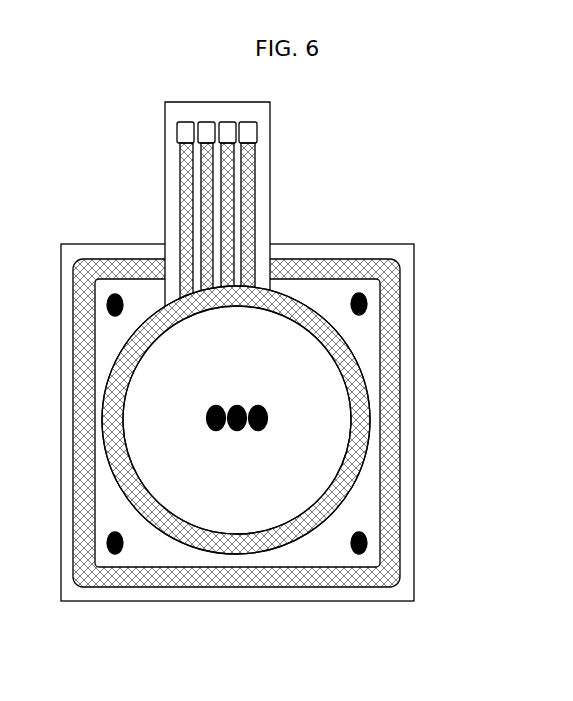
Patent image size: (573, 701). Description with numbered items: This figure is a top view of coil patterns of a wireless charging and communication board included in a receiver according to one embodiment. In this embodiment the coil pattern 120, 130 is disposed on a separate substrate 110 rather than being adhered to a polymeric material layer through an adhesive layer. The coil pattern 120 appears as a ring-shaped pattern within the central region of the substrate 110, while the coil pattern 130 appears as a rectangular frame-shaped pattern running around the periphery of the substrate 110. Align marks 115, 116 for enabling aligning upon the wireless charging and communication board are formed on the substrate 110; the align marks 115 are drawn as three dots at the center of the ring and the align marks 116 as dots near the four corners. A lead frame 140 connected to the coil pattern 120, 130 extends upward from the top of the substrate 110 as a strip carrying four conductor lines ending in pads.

The substrate 110 is at (415, 465).
The align mark 115 is at (253, 431).
The align mark 116 is at (358, 555).
The coil pattern 120 is at (360, 410).
The coil pattern 130 is at (393, 522).
The lead frame 140 is at (270, 187).